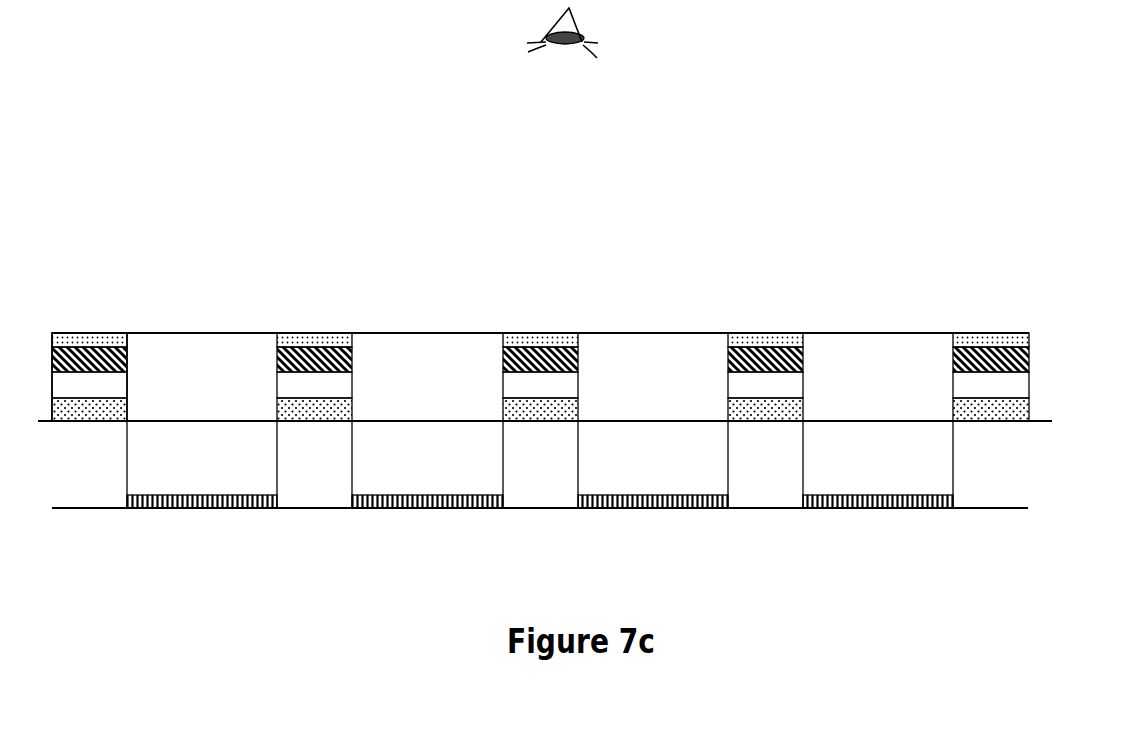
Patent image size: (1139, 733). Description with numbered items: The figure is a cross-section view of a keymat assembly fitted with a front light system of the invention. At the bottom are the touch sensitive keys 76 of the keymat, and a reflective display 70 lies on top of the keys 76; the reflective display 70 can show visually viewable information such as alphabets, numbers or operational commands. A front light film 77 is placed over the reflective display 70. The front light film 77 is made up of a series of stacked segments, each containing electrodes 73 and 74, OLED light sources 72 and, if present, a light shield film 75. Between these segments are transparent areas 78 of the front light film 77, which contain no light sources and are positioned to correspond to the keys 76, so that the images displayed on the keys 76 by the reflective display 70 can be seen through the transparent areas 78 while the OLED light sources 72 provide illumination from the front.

The reflective display 70 is at (928, 457).
The OLED light sources 72 is at (80, 383).
The electrode 73 is at (300, 405).
The electrode 74 is at (328, 355).
The light shield film 75 is at (77, 333).
The keys 76 is at (878, 510).
The front light film 77 is at (1042, 345).
The transparent areas 78 is at (640, 320).